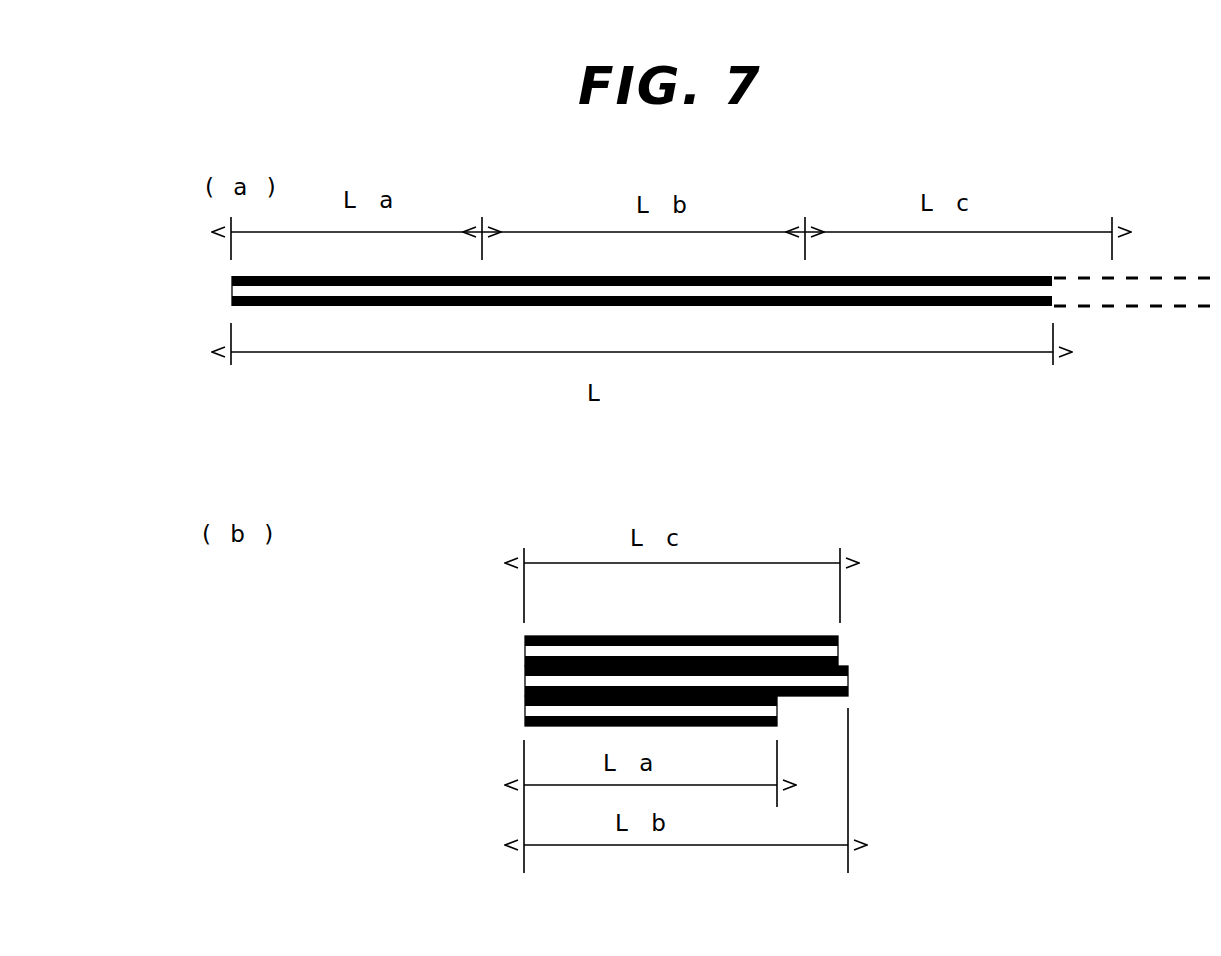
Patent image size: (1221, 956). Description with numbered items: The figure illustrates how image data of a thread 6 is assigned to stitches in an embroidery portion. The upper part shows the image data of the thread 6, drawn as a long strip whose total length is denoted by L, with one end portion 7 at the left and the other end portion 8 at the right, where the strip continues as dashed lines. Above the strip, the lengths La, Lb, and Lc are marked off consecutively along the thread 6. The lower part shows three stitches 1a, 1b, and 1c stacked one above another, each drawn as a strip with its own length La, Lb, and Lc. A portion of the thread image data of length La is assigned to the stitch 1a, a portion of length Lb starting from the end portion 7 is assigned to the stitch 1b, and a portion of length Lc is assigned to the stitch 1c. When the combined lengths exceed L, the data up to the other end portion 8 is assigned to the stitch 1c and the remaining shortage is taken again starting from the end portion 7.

The thread 6 is at (800, 306).
The end portion 7 is at (232, 290).
The other end portion 8 is at (1053, 290).
The stitch 1a is at (533, 712).
The stitch 1b is at (533, 683).
The stitch 1c is at (533, 650).